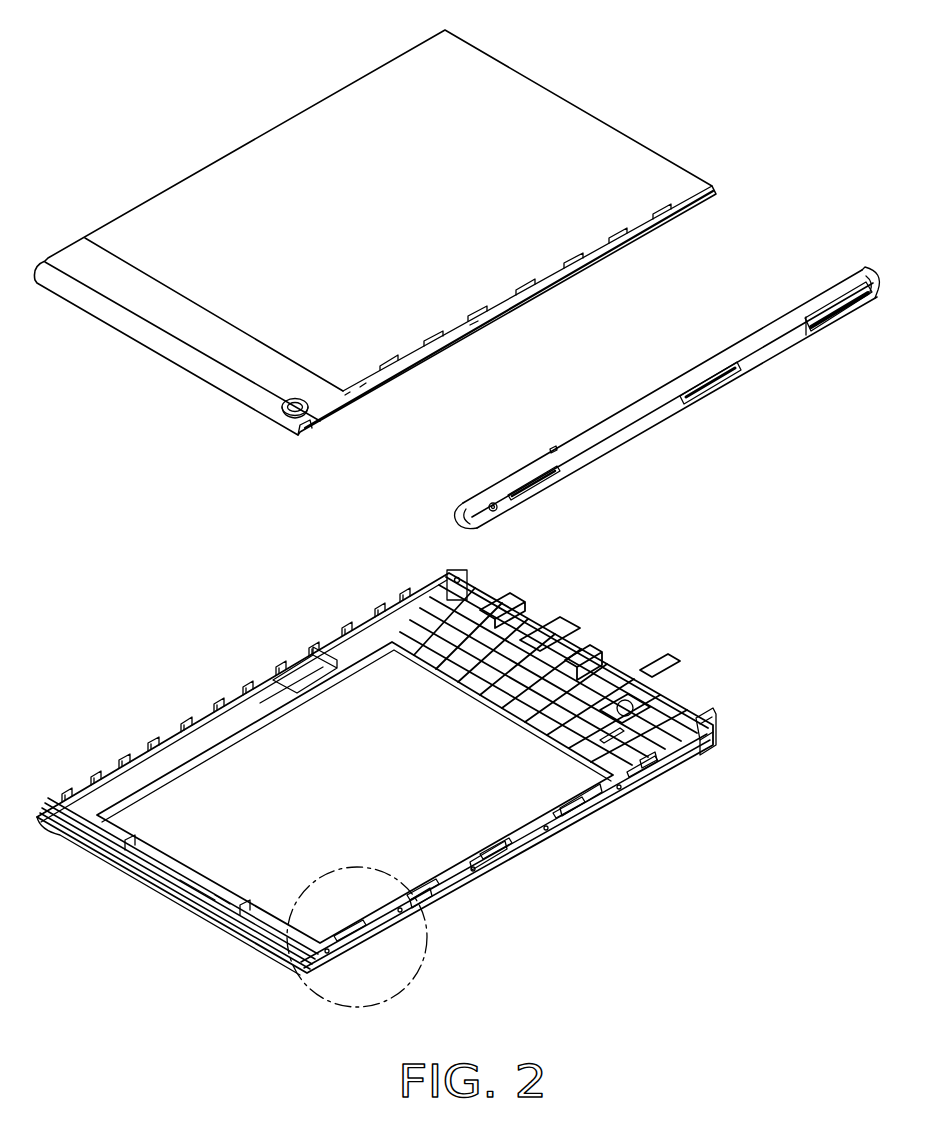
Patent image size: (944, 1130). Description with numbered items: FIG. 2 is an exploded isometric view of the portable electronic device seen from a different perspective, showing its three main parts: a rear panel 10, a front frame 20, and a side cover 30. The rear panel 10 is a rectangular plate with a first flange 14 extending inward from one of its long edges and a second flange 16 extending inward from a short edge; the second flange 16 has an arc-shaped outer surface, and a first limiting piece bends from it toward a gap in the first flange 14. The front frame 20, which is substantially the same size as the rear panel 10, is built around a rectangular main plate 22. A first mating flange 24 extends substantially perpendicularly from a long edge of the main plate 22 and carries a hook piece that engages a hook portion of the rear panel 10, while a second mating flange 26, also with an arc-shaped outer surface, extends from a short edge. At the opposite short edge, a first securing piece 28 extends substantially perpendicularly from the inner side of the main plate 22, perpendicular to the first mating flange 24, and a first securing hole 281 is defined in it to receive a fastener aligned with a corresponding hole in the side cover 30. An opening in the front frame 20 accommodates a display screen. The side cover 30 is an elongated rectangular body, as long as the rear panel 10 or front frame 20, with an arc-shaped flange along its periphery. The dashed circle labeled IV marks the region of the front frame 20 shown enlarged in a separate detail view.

The rear panel 10 is at (318, 58).
The first flange 14 is at (345, 400).
The second flange 16 is at (290, 421).
The side cover 30 is at (766, 371).
The front frame 20 is at (411, 788).
The rectangular main plate 22 is at (397, 638).
The first mating flange 24 is at (483, 870).
The second mating flange 26 is at (184, 906).
The first securing piece 28 is at (593, 667).
The first securing hole 281 is at (715, 728).
The detail circle IV is at (425, 972).